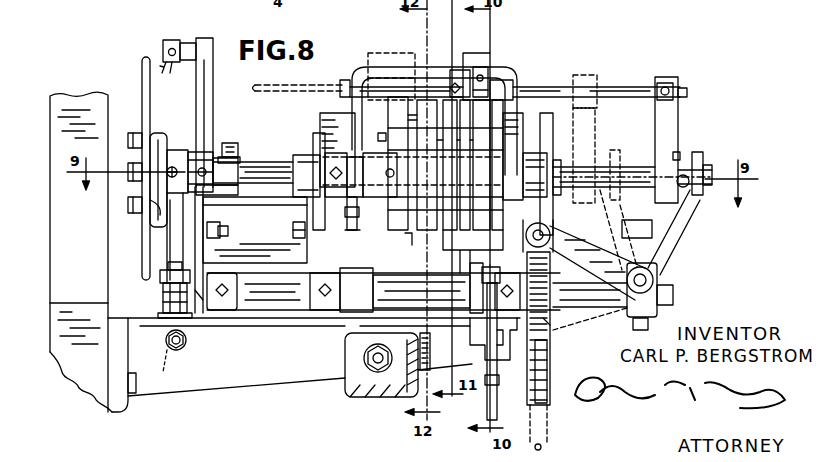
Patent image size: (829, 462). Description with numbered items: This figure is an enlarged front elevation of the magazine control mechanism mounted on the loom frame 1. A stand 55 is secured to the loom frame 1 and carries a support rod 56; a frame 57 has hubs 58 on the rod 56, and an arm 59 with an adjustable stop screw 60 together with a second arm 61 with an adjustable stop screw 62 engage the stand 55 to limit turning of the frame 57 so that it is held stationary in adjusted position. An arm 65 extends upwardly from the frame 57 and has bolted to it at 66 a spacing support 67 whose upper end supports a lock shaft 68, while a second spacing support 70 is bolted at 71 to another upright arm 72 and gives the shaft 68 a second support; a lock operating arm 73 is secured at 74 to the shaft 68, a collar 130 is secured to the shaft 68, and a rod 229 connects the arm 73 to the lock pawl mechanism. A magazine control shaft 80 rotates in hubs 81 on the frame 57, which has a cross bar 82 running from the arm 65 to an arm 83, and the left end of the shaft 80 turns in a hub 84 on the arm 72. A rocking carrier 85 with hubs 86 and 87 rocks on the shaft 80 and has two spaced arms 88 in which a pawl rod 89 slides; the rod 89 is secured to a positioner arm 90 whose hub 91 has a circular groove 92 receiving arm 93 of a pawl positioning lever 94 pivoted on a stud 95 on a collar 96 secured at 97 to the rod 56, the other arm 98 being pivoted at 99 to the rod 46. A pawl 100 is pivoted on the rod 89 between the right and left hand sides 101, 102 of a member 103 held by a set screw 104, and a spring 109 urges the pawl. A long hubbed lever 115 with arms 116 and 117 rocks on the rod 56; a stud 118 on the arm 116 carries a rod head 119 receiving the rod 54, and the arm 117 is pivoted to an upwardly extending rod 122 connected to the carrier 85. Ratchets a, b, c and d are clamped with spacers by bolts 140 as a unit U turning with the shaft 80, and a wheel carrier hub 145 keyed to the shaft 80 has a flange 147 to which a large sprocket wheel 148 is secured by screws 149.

The loom frame 1 is at (65, 325).
The rod 46 is at (540, 372).
The rod 54 is at (492, 400).
The stand 55 is at (227, 375).
The support rod 56 is at (245, 296).
The frame 57 is at (282, 258).
The hubs 58 is at (194, 294).
The arm 59 is at (163, 281).
The adjustable stop screw 60 is at (168, 293).
The second arm 61 is at (171, 360).
The adjustable stop screw 62 is at (182, 357).
The arm 65 is at (323, 127).
The bolt 66 is at (297, 230).
The spacing support 67 is at (310, 205).
The lock shaft 68 is at (272, 173).
The second spacing support 70 is at (185, 205).
The bolt 71 is at (219, 230).
The upright arm 72 is at (199, 215).
The lock operating arm 73 is at (212, 78).
The securing point 74 is at (200, 167).
The magazine control shaft 80 is at (636, 170).
The hubs 81 is at (320, 157).
The cross bar 82 is at (541, 110).
The arm 83 is at (548, 140).
The hub 84 is at (220, 152).
The rocking carrier 85 is at (355, 77).
The hub 86 is at (520, 163).
The hub 87 is at (349, 221).
The spaced arms 88 is at (352, 104).
The pawl rod 89 is at (630, 90).
The positioner arm 90 is at (665, 121).
The hub 91 is at (676, 157).
The circular groove 92 is at (684, 158).
The arm 93 is at (677, 205).
The pawl positioning lever 94 is at (660, 248).
The stud 95 is at (652, 280).
The collar 96 is at (658, 302).
The securing point 97 is at (633, 326).
The arm 98 is at (592, 257).
The pivot 99 is at (550, 228).
The pawl 100 is at (505, 88).
The right hand side 101 is at (484, 90).
The left hand side 102 is at (468, 53).
The member 103 is at (483, 70).
The set screw 104 is at (447, 83).
The spring 109 is at (493, 83).
The long hubbed lever 115 is at (405, 297).
The arm 116 is at (478, 297).
The arm 117 is at (370, 299).
The stud 118 is at (497, 280).
The rod head 119 is at (491, 330).
The upwardly extending rod 122 is at (405, 240).
The collar 130 is at (358, 240).
The bolts 140 is at (380, 137).
The wheel carrier hub 145 is at (165, 150).
The flange 147 is at (155, 212).
The large sprocket wheel 148 is at (147, 78).
The screws 149 is at (132, 202).
The rod 229 is at (165, 47).
The unit U is at (398, 100).
The ratchet a is at (407, 242).
The ratchet b is at (428, 240).
The ratchet c is at (459, 240).
The ratchet d is at (487, 232).